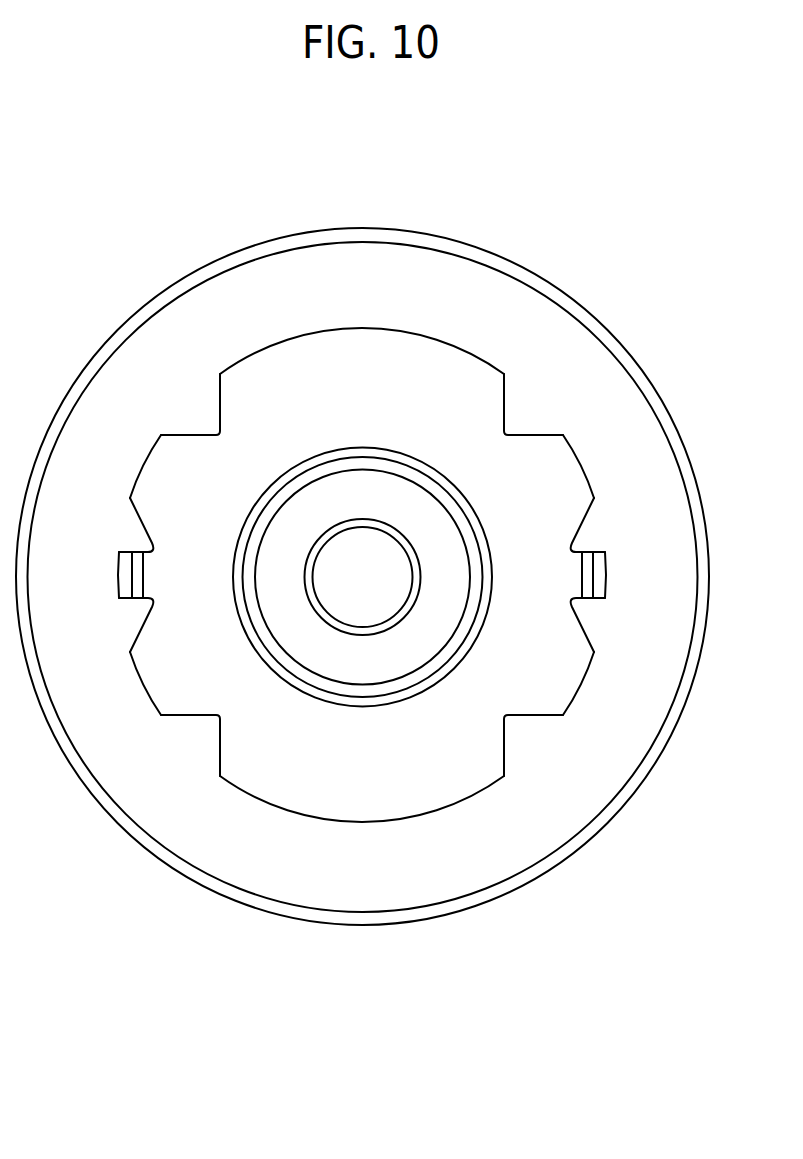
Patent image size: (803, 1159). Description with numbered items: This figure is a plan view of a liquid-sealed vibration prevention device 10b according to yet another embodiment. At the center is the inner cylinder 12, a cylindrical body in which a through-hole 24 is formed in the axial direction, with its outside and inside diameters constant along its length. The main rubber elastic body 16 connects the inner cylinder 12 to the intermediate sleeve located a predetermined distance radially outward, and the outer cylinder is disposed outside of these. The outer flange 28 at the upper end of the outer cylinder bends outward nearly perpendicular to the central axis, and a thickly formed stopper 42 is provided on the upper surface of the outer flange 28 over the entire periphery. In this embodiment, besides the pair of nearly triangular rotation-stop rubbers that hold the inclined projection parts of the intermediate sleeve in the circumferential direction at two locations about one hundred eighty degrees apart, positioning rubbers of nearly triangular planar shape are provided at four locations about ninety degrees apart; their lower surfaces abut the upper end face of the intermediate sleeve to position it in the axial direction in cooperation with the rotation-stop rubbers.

The liquid-sealed vibration prevention device 10b is at (223, 221).
The inner cylinder 12 is at (363, 658).
The main rubber elastic body 16 is at (358, 388).
The through-hole 24 is at (378, 532).
The outer flange 28 is at (652, 397).
The stopper 42 is at (640, 493).